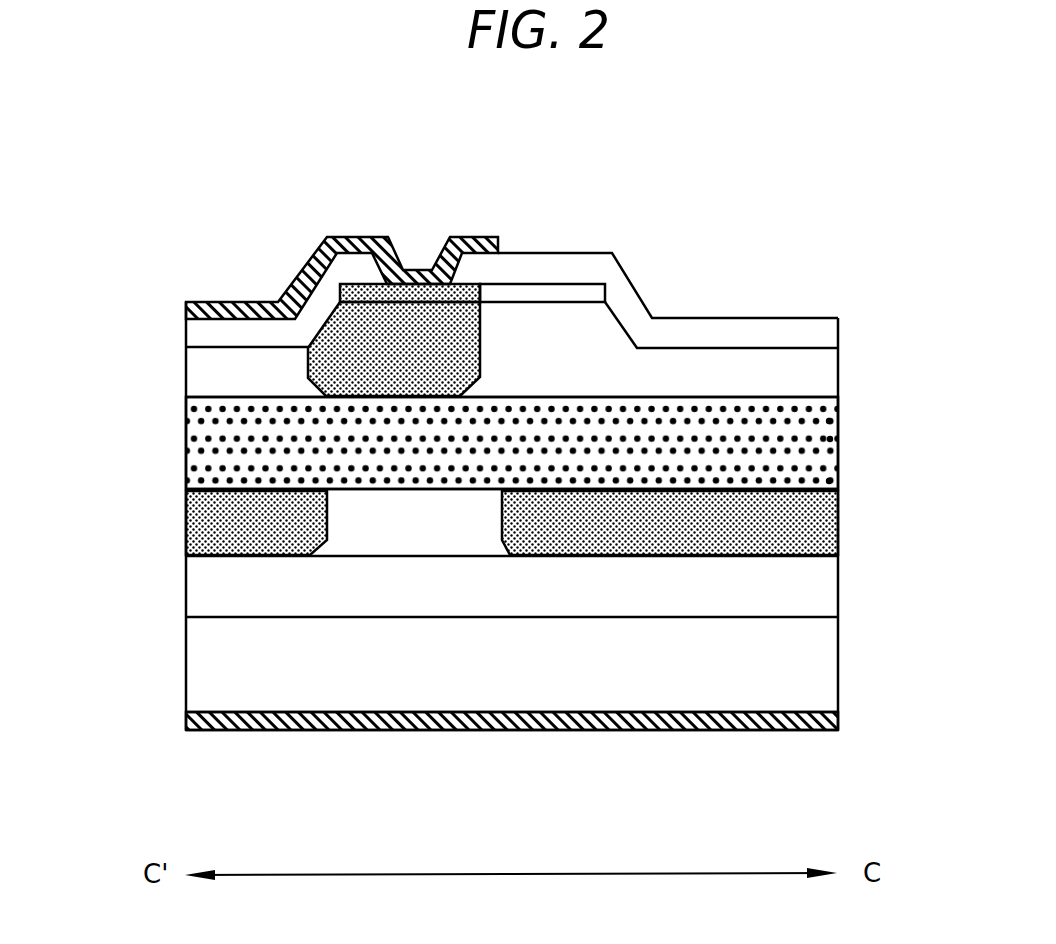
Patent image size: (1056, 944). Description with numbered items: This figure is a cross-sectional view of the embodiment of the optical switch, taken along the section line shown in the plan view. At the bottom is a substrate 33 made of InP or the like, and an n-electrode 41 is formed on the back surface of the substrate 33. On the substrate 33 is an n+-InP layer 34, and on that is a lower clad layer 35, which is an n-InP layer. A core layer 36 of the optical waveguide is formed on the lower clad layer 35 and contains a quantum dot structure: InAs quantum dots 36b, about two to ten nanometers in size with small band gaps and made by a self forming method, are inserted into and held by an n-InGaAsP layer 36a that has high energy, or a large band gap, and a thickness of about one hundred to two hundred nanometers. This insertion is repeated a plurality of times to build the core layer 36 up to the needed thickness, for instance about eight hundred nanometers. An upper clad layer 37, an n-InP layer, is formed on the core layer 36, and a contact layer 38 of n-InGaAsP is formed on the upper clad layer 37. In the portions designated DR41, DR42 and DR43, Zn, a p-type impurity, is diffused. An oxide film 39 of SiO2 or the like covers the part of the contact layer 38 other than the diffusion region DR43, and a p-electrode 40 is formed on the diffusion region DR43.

The substrate 33 is at (838, 663).
The n+-InP layer 34 is at (838, 583).
The lower clad layer 35 is at (838, 521).
The core layer 36 is at (186, 397).
The n-InGaAsP layer 36a is at (767, 410).
The quantum dots 36b is at (829, 422).
The upper clad layer 37 is at (186, 373).
The contact layer 38 is at (592, 282).
The oxide film 39 is at (611, 254).
The p-electrode 40 is at (217, 301).
The n-electrode 41 is at (838, 718).
The diffusion region DR41 is at (713, 523).
The diffusion region DR42 is at (245, 523).
The diffusion region DR43 is at (372, 363).